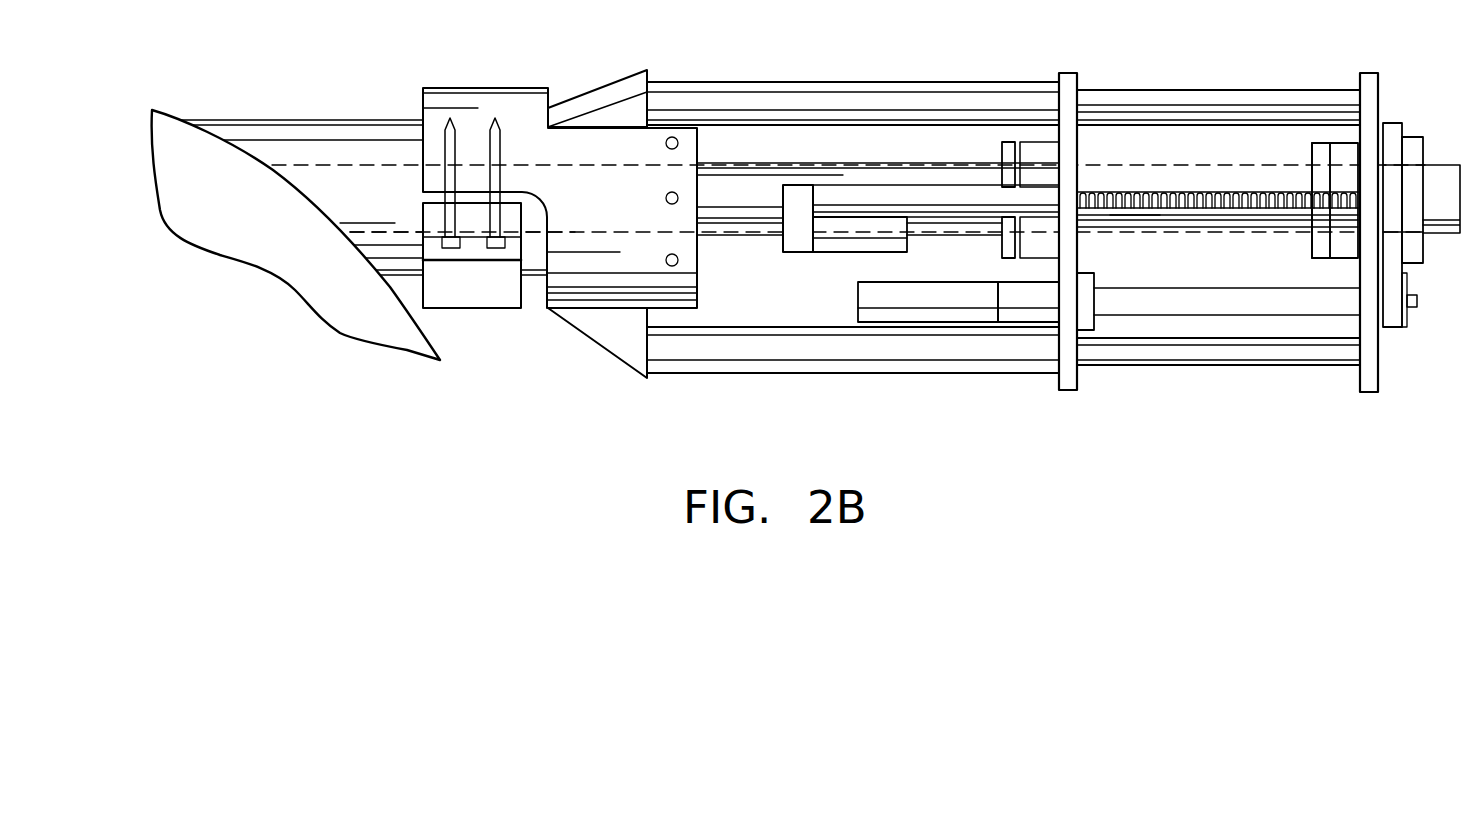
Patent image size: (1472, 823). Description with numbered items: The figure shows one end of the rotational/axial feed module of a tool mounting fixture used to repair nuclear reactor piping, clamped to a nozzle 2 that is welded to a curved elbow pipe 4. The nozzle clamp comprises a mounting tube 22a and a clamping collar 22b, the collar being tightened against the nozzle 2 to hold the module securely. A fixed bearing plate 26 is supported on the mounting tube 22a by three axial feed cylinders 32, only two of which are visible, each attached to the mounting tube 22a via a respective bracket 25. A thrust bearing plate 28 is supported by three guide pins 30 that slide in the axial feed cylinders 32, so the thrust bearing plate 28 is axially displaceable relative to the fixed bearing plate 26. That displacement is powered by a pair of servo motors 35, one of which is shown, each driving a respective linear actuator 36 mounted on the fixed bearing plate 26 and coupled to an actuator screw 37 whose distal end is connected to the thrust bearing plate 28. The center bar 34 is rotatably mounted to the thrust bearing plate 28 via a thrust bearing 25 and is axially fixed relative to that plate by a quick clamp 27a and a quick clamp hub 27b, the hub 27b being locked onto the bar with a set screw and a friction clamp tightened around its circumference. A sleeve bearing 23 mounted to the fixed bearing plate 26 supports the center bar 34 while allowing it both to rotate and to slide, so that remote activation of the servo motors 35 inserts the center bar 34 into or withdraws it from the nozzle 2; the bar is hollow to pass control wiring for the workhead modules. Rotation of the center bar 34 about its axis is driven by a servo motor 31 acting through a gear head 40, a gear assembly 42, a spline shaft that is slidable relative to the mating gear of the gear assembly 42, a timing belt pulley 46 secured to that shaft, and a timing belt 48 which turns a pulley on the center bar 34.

The nozzle 2 is at (342, 135).
The elbow pipe 4 is at (204, 186).
The mounting tube 22a is at (508, 105).
The clamping collar 22b is at (463, 297).
The sleeve bearing 23 is at (1010, 142).
The bracket 25 is at (622, 85).
The fixed bearing plate 26 is at (1070, 82).
The quick clamp 27a is at (1312, 248).
The quick clamp hub 27b is at (1413, 140).
The thrust bearing plate 28 is at (1368, 75).
The guide pin 30 is at (1205, 92).
The servo motor 31 is at (870, 298).
The axial feed cylinder 32 is at (818, 80).
The center bar 34 is at (1135, 165).
The servo motor 35 is at (820, 253).
The linear actuator 36 is at (883, 190).
The actuator screw 37 is at (1135, 210).
The gear head 40 is at (1015, 288).
The gear assembly 42 is at (1097, 318).
The timing belt pulley 46 is at (1405, 320).
The timing belt 48 is at (1395, 250).